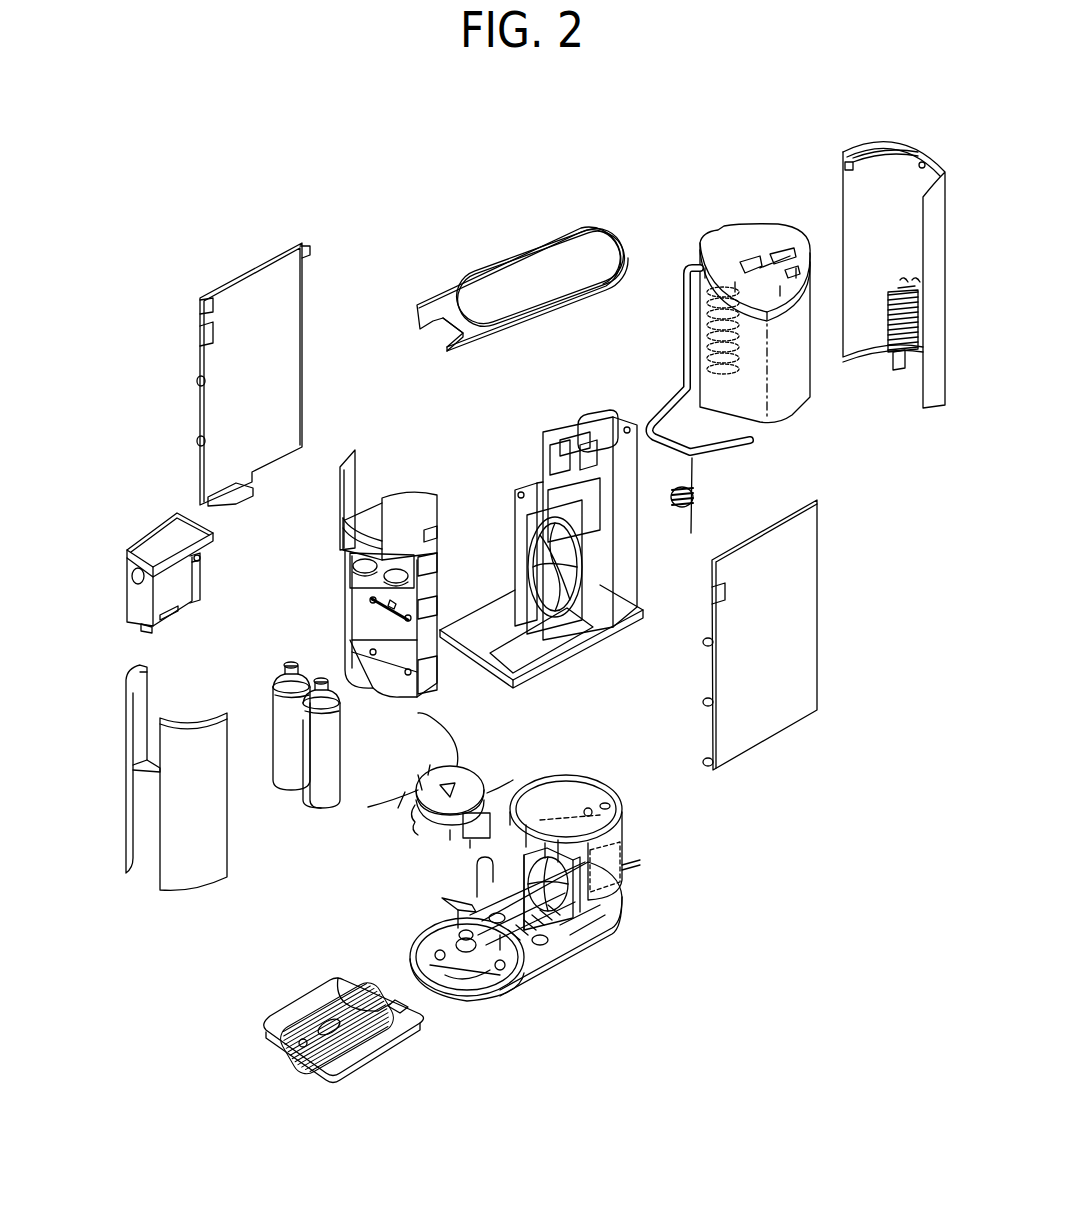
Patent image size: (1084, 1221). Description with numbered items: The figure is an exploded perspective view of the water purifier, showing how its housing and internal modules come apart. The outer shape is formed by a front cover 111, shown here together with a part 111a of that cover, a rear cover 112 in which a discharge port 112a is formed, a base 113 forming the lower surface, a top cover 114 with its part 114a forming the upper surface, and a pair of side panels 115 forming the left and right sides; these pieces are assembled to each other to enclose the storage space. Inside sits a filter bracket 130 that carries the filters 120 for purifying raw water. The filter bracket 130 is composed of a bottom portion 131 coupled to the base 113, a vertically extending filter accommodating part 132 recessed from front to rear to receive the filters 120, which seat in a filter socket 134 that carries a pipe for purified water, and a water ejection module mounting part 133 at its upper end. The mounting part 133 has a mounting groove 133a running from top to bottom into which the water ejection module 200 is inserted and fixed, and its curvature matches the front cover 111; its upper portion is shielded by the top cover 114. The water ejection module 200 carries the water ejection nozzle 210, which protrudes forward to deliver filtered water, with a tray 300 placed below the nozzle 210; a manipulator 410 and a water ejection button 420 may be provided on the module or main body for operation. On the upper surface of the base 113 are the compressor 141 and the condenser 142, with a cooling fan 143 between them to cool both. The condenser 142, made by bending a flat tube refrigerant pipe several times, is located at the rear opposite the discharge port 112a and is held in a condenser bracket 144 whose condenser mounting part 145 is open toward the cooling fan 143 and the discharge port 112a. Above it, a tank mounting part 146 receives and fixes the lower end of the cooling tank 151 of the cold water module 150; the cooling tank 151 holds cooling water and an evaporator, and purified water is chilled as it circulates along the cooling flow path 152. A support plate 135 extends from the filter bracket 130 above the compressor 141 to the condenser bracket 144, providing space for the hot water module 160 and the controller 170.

The front cover 111 is at (181, 870).
The side strip of front case 111a is at (150, 733).
The rear cover 112 is at (893, 170).
The discharge port 112a is at (888, 308).
The base 113 is at (520, 960).
The top cover 114 is at (515, 268).
The tab of top cover 114a is at (437, 341).
The side panels 115 is at (256, 272).
The filter 120 is at (288, 775).
The filter bracket 130 is at (275, 656).
The bottom portion 131 is at (360, 662).
The filter accommodating part 132 is at (368, 610).
The water ejection module mounting part 133 is at (343, 518).
The mounting groove 133a is at (372, 505).
The filter socket 134 is at (350, 562).
The support plate 135 is at (570, 648).
The compressor 141 is at (405, 818).
The condenser 142 is at (612, 888).
The cooling fan 143 is at (518, 873).
The condenser bracket 144 is at (636, 845).
The condenser mounting part 145 is at (628, 868).
The tank mounting part 146 is at (566, 792).
The cold water module 150 is at (726, 208).
The cooling tank 151 is at (800, 380).
The cooling flow path 152 is at (712, 325).
The hot water module 160 is at (545, 490).
The controller 170 is at (571, 420).
The water ejection module 200 is at (133, 597).
The water ejection nozzle 210 is at (135, 632).
The tray 300 is at (370, 1060).
The manipulator 410 is at (150, 540).
The water ejection button 420 is at (130, 572).